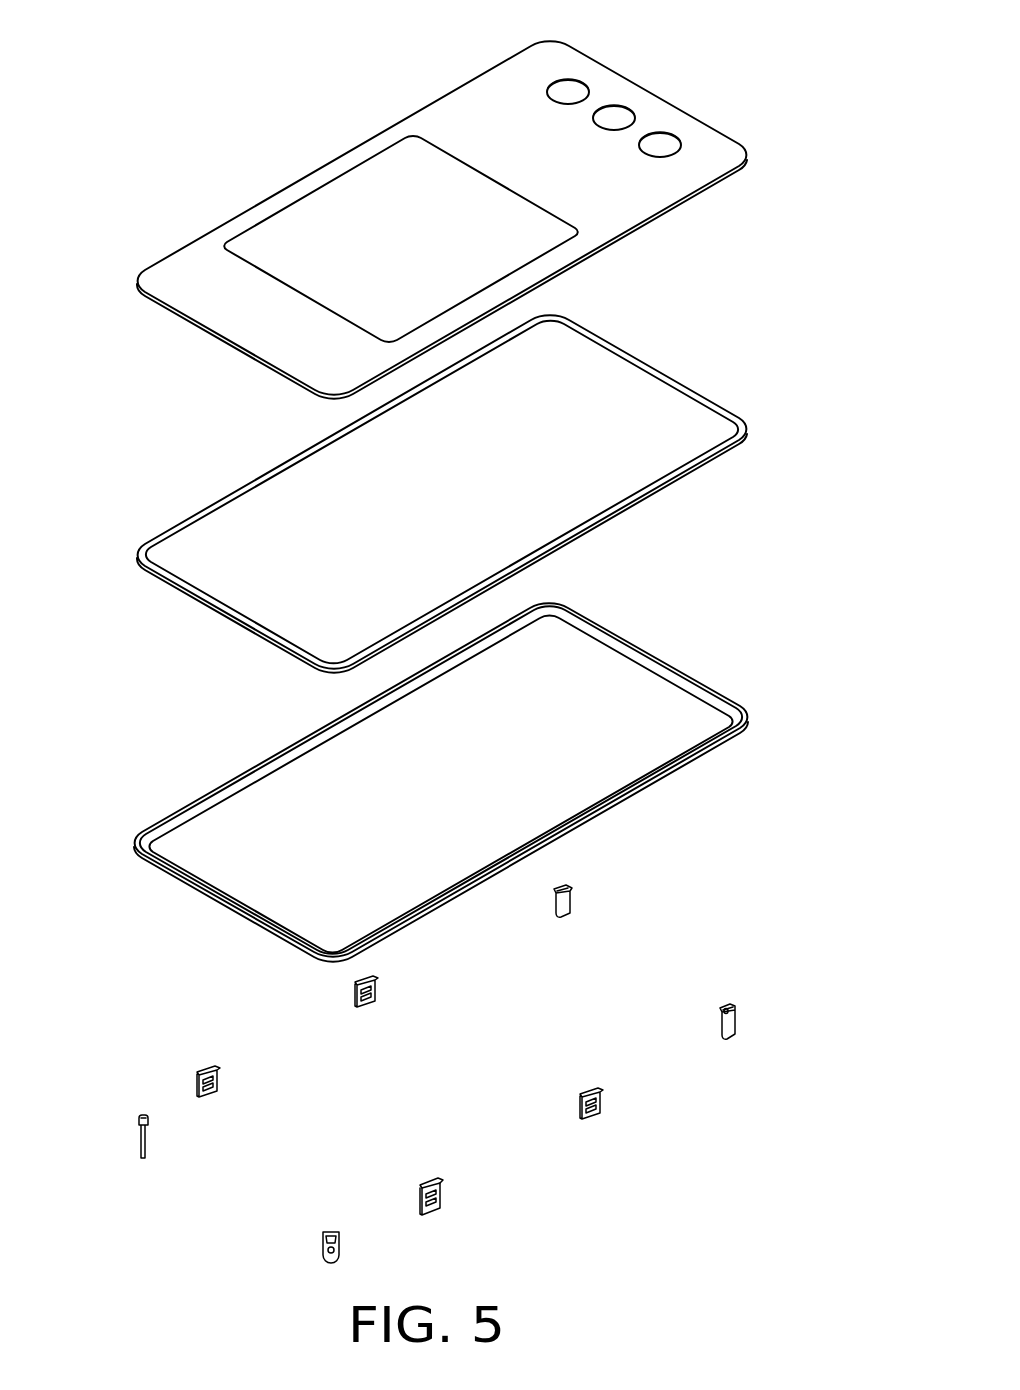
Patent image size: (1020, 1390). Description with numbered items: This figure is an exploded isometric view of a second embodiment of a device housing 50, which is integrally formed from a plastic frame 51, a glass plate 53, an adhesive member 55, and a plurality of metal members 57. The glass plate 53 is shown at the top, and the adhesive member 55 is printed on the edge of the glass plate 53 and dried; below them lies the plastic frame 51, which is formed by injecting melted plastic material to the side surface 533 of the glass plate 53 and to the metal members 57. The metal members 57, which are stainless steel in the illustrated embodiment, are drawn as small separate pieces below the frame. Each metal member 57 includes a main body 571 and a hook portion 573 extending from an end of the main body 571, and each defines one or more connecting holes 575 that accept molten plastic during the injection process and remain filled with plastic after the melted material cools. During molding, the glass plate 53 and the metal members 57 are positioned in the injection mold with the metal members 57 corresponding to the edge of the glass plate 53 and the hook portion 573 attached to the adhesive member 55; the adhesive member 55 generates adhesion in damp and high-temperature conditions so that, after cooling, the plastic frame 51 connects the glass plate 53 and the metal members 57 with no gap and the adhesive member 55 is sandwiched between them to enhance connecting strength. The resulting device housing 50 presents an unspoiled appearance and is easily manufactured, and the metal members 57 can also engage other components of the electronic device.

The device housing 50 is at (320, 46).
The glass plate 53 is at (343, 242).
The side surface 533 is at (615, 238).
The adhesive member 55 is at (186, 512).
The plastic frame 51 is at (190, 798).
The metal member 57 is at (204, 1074).
The main body 571 is at (438, 1207).
The hook portion 573 is at (437, 1183).
The connecting hole 575 is at (442, 1185).